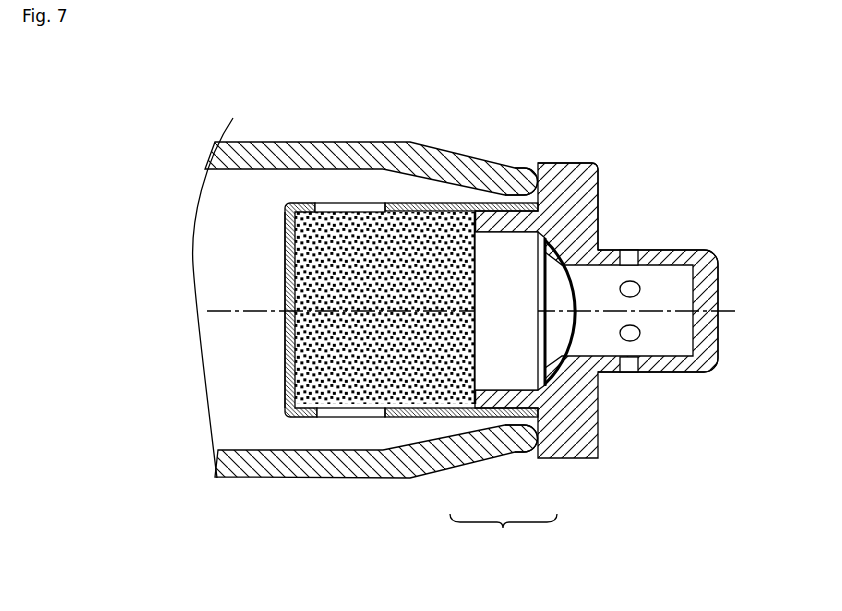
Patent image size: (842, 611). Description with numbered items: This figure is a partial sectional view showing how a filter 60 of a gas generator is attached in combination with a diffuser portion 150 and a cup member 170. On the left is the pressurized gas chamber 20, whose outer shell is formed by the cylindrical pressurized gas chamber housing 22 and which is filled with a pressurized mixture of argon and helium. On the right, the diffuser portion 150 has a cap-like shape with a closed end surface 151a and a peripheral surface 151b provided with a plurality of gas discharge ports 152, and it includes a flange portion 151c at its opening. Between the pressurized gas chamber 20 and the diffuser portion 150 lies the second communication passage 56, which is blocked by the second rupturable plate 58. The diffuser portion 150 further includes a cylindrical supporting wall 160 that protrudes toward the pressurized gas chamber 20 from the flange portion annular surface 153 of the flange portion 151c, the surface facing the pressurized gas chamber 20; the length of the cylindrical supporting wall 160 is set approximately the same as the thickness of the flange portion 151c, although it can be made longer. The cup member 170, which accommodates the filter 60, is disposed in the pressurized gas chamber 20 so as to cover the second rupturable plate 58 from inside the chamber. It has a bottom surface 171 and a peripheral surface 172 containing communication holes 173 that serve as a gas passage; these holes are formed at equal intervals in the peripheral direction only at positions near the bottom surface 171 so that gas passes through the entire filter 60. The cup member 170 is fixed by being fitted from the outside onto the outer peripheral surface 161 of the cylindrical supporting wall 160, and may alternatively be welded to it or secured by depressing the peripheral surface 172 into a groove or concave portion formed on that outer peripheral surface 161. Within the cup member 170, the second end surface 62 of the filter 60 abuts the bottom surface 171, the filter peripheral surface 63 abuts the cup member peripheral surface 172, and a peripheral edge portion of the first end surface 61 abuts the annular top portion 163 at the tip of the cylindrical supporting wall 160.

The pressurized gas chamber 20 is at (213, 284).
The pressurized gas chamber housing 22 is at (293, 152).
The second communication passage 56 is at (643, 322).
The second rupturable plate 58 is at (578, 318).
The filter 60 is at (402, 402).
The first end surface 61 is at (476, 332).
The second end surface 62 is at (287, 237).
The filter peripheral surface 63 is at (343, 410).
The diffuser portion 150 is at (610, 286).
The closed end surface 151a is at (672, 272).
The peripheral surface 151b is at (677, 373).
The flange portion 151c is at (580, 170).
The gas discharge ports 152 is at (630, 368).
The flange portion annular surface 153 is at (511, 190).
The cylindrical supporting wall 160 is at (503, 537).
The outer peripheral surface 161 is at (513, 452).
The annular top portion 163 is at (458, 410).
The cup member 170 is at (331, 308).
The bottom surface 171 is at (287, 320).
The peripheral surface 172 is at (420, 208).
The communication holes 173 is at (353, 208).